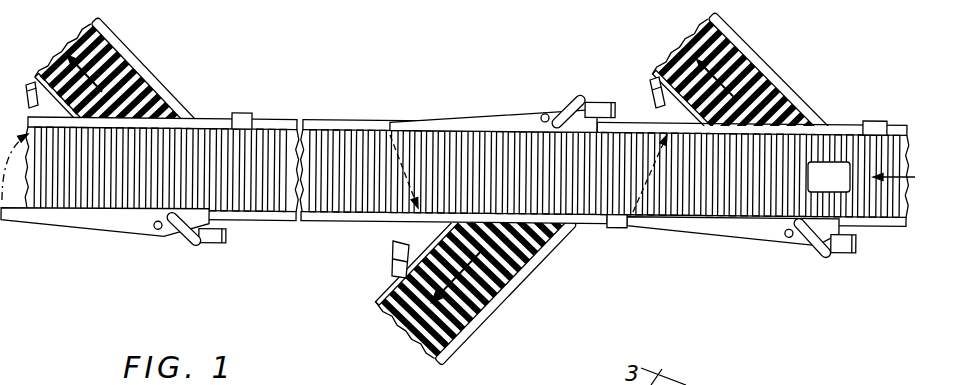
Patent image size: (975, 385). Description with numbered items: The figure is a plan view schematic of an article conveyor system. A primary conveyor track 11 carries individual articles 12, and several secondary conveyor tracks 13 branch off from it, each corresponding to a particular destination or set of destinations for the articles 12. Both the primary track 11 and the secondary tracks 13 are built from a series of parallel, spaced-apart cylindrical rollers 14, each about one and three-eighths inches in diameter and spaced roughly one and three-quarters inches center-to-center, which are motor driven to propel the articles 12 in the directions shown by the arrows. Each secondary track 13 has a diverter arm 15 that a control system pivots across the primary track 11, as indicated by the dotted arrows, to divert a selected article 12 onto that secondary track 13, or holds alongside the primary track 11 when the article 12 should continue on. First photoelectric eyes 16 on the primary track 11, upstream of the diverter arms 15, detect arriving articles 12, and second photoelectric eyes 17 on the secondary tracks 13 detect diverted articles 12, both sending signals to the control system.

The primary conveyor track 11 is at (340, 122).
The article 12 is at (820, 188).
The secondary conveyor track 13 is at (157, 72).
The cylindrical roller 14 is at (315, 222).
The diverter arm 15 is at (478, 110).
The first photoelectric eye 16 is at (245, 112).
The second photoelectric eye 17 is at (30, 81).